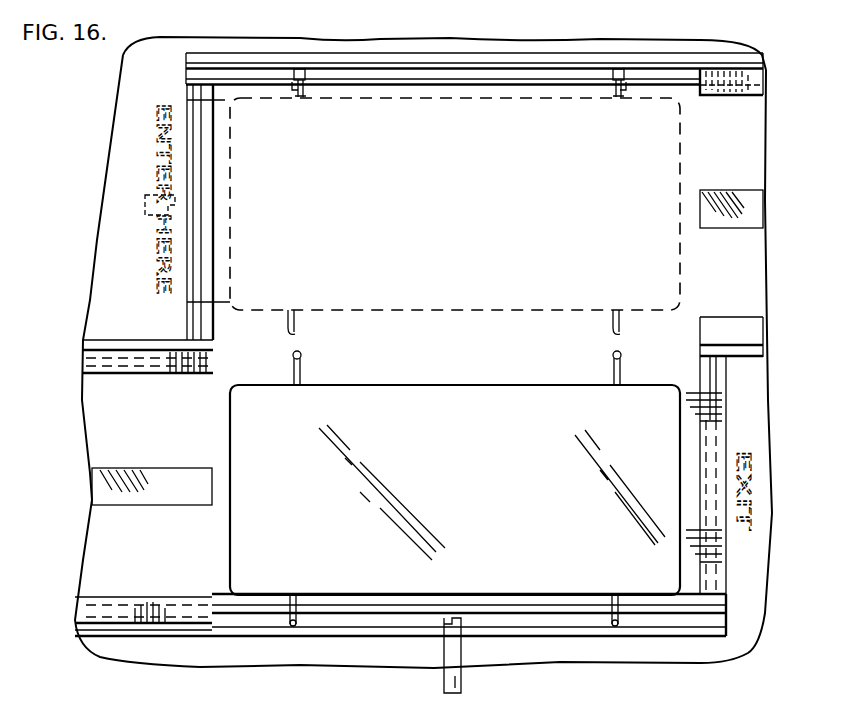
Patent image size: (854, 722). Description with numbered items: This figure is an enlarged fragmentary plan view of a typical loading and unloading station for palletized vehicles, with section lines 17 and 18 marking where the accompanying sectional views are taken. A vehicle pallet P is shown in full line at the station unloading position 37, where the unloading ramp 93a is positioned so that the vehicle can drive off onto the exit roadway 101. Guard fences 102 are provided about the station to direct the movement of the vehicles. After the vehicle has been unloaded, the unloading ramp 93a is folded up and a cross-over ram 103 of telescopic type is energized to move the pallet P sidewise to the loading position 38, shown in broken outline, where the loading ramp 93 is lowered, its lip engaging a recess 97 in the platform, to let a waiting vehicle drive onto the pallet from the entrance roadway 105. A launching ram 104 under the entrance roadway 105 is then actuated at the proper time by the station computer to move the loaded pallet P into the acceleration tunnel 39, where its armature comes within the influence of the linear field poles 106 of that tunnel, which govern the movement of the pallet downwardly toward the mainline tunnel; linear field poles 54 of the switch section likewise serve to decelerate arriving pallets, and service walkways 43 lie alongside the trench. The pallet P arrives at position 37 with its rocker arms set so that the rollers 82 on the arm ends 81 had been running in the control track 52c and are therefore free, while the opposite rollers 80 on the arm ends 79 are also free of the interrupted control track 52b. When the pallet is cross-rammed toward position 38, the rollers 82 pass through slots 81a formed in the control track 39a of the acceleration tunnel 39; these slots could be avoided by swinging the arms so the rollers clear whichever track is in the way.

The section line 17- 17 is at (454, 33).
The section line 18- 18 is at (143, 200).
The vehicle unloading stop 37 is at (222, 428).
The vehicle loading stop 38 is at (692, 146).
The acceleration tunnel 39 is at (762, 135).
The control track 39a is at (452, 72).
The service walkways 43 is at (188, 376).
The interrupted control track 52b is at (358, 618).
The control track 52c is at (118, 357).
The linear field poles 54 is at (138, 498).
The rocker arm ends 79 is at (286, 320).
The rollers 80 is at (312, 332).
The opposite rocker arm ends 81 is at (288, 96).
The slots 81a is at (302, 86).
The rollers 82 is at (302, 72).
The run-on ramp 93 is at (228, 268).
The unloading ramp 93a is at (722, 572).
The recess 97 is at (188, 316).
The exit roadway 101 is at (765, 438).
The guard fences 102 is at (676, 60).
The cross-over ram 103 is at (462, 680).
The launching ram 104 is at (148, 215).
The entrance roadway 105 is at (97, 205).
The linear field poles 106 is at (732, 225).
The vehicle pallet P is at (498, 318).